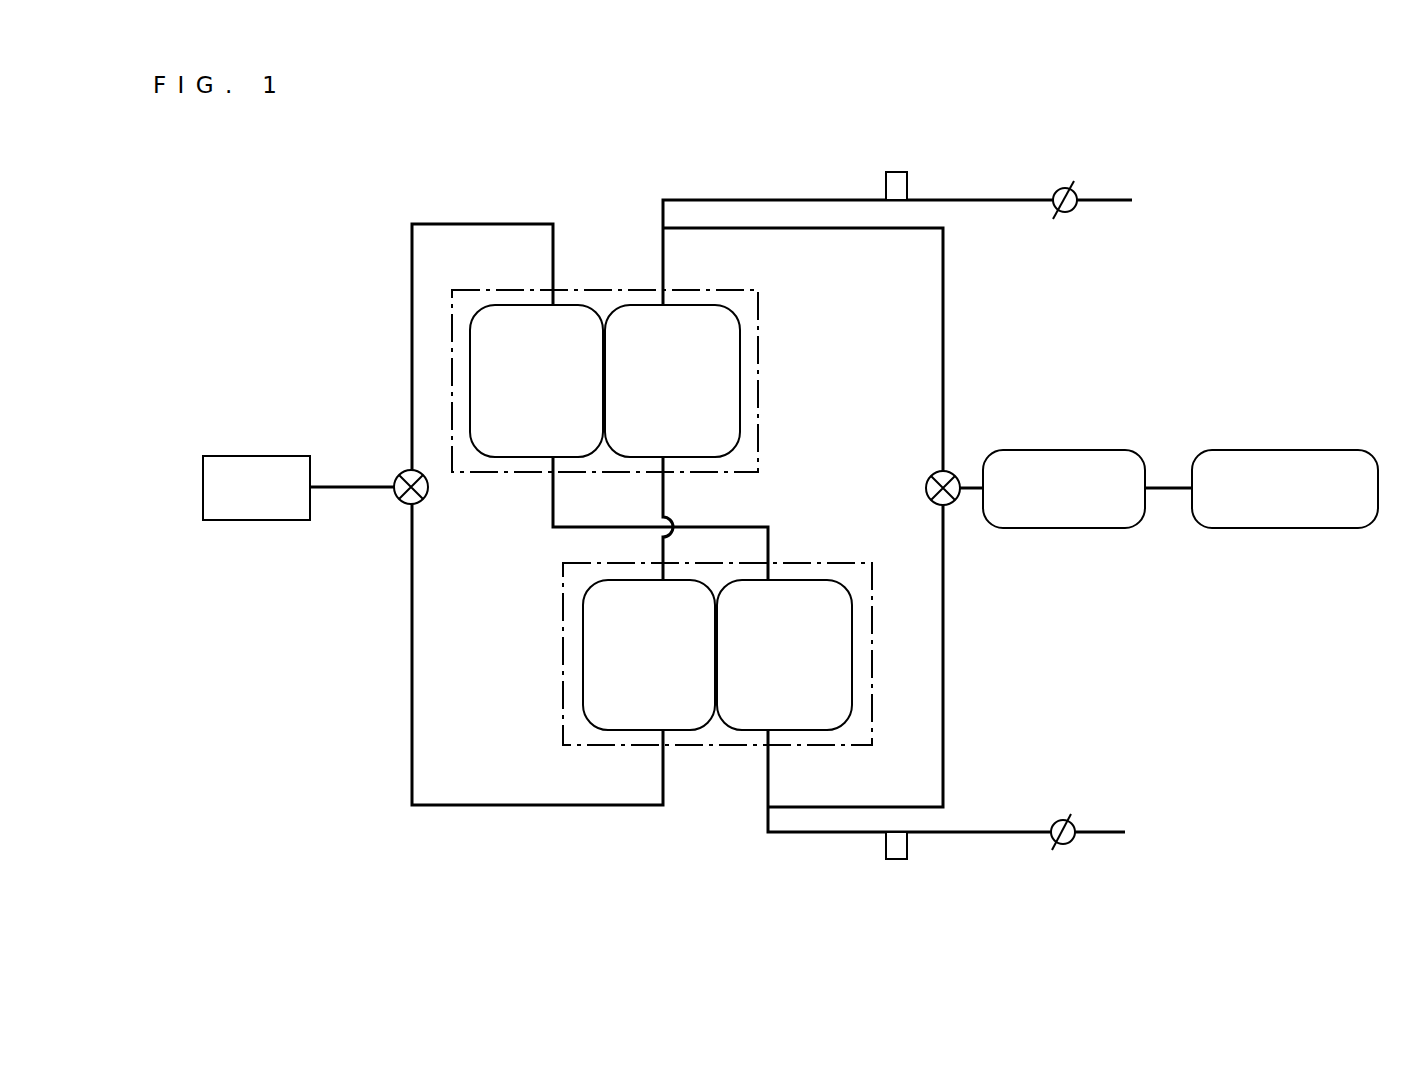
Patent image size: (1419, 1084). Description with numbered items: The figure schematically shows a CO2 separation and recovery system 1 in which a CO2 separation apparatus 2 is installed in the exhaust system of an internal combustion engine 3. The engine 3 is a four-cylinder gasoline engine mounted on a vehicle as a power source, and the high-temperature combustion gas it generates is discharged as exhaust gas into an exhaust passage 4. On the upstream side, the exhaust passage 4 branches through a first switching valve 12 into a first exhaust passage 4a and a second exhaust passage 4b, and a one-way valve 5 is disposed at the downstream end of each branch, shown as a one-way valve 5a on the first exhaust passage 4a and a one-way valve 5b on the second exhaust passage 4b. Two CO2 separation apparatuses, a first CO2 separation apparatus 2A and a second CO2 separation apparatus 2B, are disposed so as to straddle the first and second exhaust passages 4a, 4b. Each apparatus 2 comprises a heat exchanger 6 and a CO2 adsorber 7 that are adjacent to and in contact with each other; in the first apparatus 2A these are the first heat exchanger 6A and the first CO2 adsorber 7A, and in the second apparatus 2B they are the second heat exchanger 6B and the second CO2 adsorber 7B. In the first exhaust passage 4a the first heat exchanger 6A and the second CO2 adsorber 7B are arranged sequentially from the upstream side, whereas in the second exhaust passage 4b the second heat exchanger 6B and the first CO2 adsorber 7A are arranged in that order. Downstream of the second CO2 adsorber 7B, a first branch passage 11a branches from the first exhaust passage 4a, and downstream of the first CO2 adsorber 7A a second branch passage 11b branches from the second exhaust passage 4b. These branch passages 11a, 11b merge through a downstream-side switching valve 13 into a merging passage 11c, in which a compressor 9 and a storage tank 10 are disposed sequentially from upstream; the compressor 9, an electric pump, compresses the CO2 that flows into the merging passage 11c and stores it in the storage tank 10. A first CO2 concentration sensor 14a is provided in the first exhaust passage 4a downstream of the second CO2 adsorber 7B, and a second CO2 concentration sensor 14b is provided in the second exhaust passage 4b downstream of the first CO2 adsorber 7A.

The CO2 separation and recovery system 1 is at (336, 178).
The CO2 separation apparatus 2 is at (683, 497).
The first CO2 separation apparatus 2A is at (662, 361).
The second CO2 separation apparatus 2B is at (689, 654).
The internal combustion engine 3 is at (246, 456).
The exhaust passage 4 is at (359, 475).
The first exhaust passage 4a is at (412, 310).
The second exhaust passage 4b is at (717, 200).
The one-way valve 5 is at (1022, 524).
The one-way valve 5a is at (1053, 848).
The one-way valve 5b is at (1058, 190).
The heat exchanger 6 is at (512, 353).
The first heat exchanger 6A is at (480, 305).
The second heat exchanger 6B is at (583, 685).
The CO2 adsorber 7 is at (735, 381).
The first CO2 adsorber 7A is at (741, 402).
The second CO2 adsorber 7B is at (852, 680).
The compressor 9 is at (1057, 450).
The storage tank 10 is at (1283, 450).
The first branch passage 11a is at (943, 648).
The second branch passage 11b is at (944, 335).
The merging passage 11c is at (970, 486).
The first switching valve 12 is at (428, 490).
The downstream-side switching valve 13 is at (925, 494).
The first CO2 concentration sensor 14a is at (895, 860).
The second CO2 concentration sensor 14b is at (898, 172).